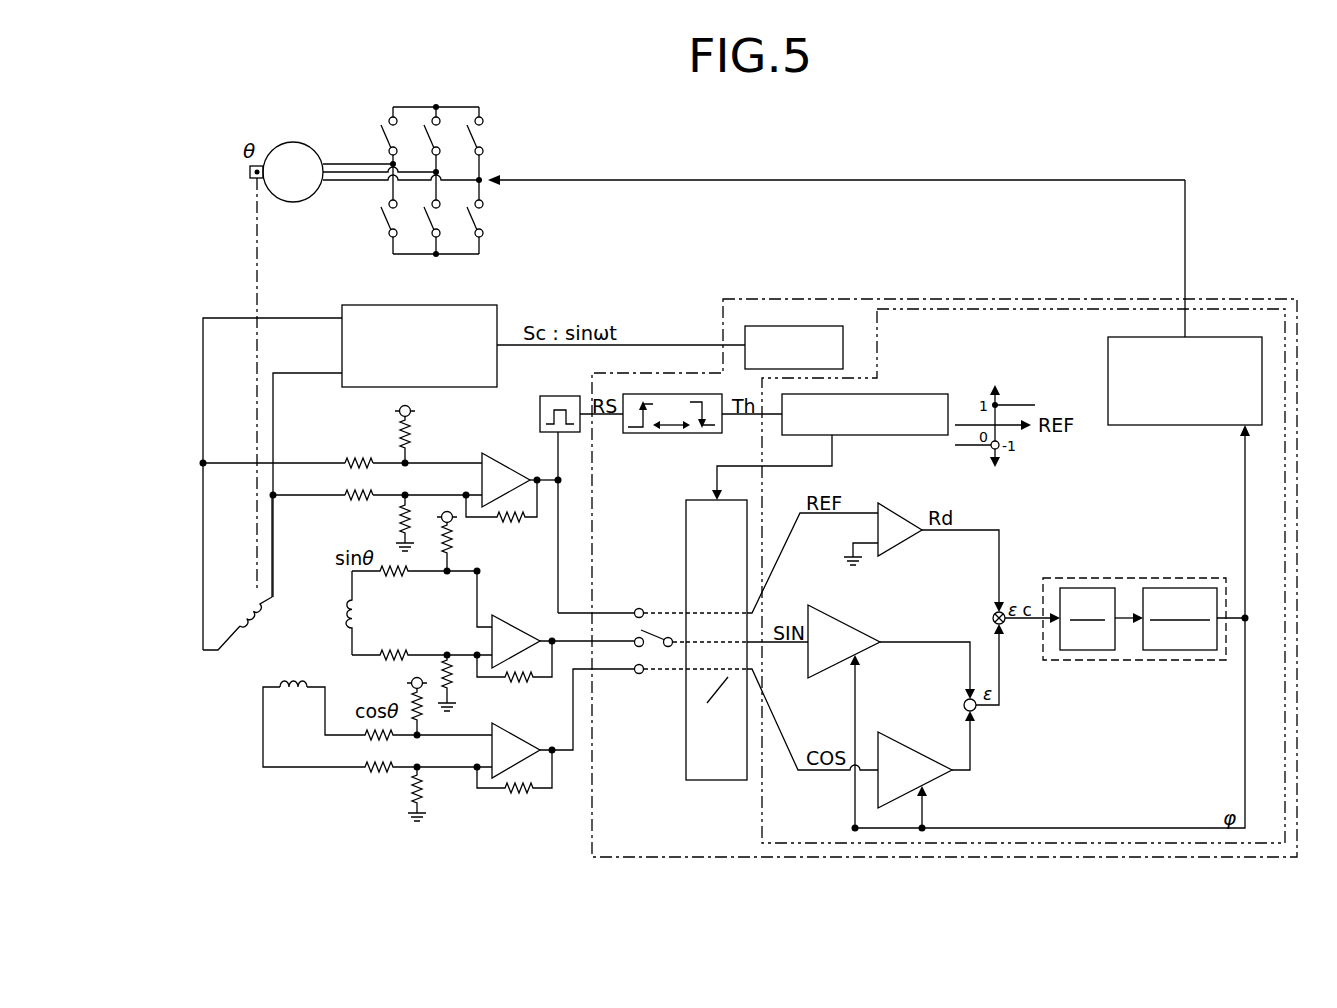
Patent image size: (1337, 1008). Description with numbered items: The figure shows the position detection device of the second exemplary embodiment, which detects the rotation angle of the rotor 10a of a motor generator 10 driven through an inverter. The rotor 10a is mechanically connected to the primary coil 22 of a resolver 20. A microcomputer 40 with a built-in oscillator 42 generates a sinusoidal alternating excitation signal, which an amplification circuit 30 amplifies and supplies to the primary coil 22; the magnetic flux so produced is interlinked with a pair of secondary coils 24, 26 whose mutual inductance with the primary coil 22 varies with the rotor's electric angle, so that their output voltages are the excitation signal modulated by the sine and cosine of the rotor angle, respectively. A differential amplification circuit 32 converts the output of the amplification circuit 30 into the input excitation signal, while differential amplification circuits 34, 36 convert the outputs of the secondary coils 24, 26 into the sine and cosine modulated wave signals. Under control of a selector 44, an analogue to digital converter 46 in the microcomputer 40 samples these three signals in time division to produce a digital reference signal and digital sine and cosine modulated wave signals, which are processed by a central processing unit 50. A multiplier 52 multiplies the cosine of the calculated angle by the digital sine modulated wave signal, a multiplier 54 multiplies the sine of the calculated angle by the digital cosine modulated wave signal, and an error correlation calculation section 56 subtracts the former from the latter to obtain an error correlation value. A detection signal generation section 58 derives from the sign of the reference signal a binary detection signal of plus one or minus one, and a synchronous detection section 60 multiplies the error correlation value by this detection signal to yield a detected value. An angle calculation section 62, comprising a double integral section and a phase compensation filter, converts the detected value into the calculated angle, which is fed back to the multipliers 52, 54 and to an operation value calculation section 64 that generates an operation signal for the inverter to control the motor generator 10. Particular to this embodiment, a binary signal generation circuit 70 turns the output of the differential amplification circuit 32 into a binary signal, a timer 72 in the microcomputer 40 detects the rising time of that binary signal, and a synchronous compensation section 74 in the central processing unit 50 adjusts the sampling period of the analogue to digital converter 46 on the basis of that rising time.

The motor generator 10 is at (310, 143).
The rotor 10a is at (246, 180).
The resolver 20 is at (246, 666).
The primary coil 22 is at (256, 616).
The secondary coil 24 is at (358, 612).
The secondary coil 26 is at (296, 690).
The amplification circuit 30 is at (460, 305).
The differential amplification circuit 32 is at (497, 460).
The differential amplification circuit 34 is at (517, 624).
The differential amplification circuit 36 is at (521, 737).
The microcomputer 40 is at (857, 298).
The built-in oscillator 42 is at (785, 327).
The selector 44 is at (651, 605).
The AD converter 46 is at (686, 530).
The CPU 50 is at (965, 300).
The multiplier 52 is at (865, 625).
The multiplier 54 is at (928, 755).
The error correlation calculation section 56 is at (964, 703).
The detection signal generation section 58 is at (902, 503).
The synchronous detection section 60 is at (992, 614).
The angle calculation section 62 is at (1097, 578).
The operation value calculation section 64 is at (1108, 385).
The binary signal generation circuit 70 is at (538, 400).
The timer 72 is at (680, 435).
The synchronous compensation section 74 is at (855, 437).